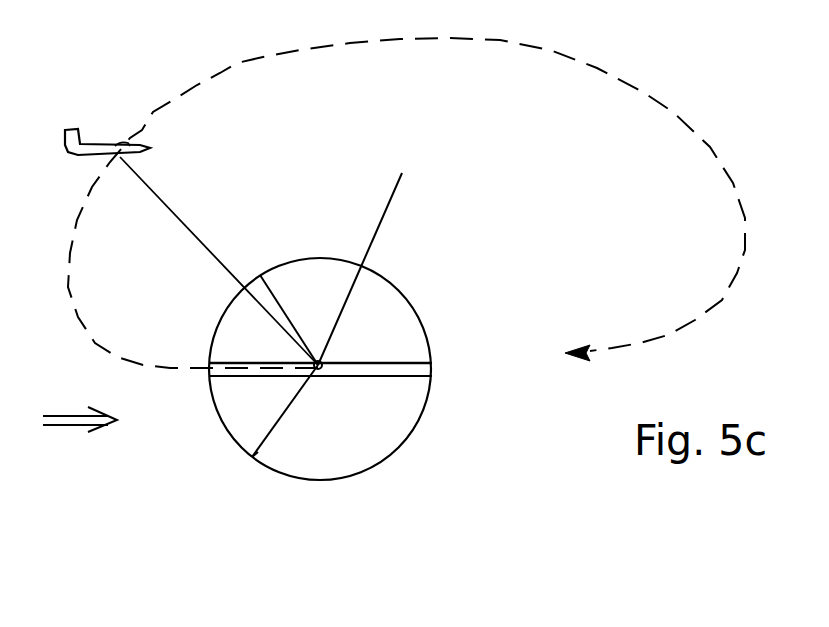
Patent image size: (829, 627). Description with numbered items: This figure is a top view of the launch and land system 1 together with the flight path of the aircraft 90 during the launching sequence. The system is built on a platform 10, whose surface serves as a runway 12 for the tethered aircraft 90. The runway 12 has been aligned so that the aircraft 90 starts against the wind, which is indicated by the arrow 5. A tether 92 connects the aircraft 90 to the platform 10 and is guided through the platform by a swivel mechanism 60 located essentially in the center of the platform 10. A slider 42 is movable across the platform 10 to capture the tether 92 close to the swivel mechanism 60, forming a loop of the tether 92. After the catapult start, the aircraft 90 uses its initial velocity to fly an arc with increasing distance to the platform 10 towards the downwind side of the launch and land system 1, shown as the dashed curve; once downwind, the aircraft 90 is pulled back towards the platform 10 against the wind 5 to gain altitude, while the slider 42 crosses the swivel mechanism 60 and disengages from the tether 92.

The launch and land system 1 is at (422, 483).
The wind 5 is at (75, 443).
The platform 10 is at (327, 443).
The runway 12 is at (375, 372).
The slider 42 is at (318, 365).
The swivel mechanism 60 is at (372, 252).
The tethered aircraft 90 is at (100, 150).
The tether 92 is at (203, 240).